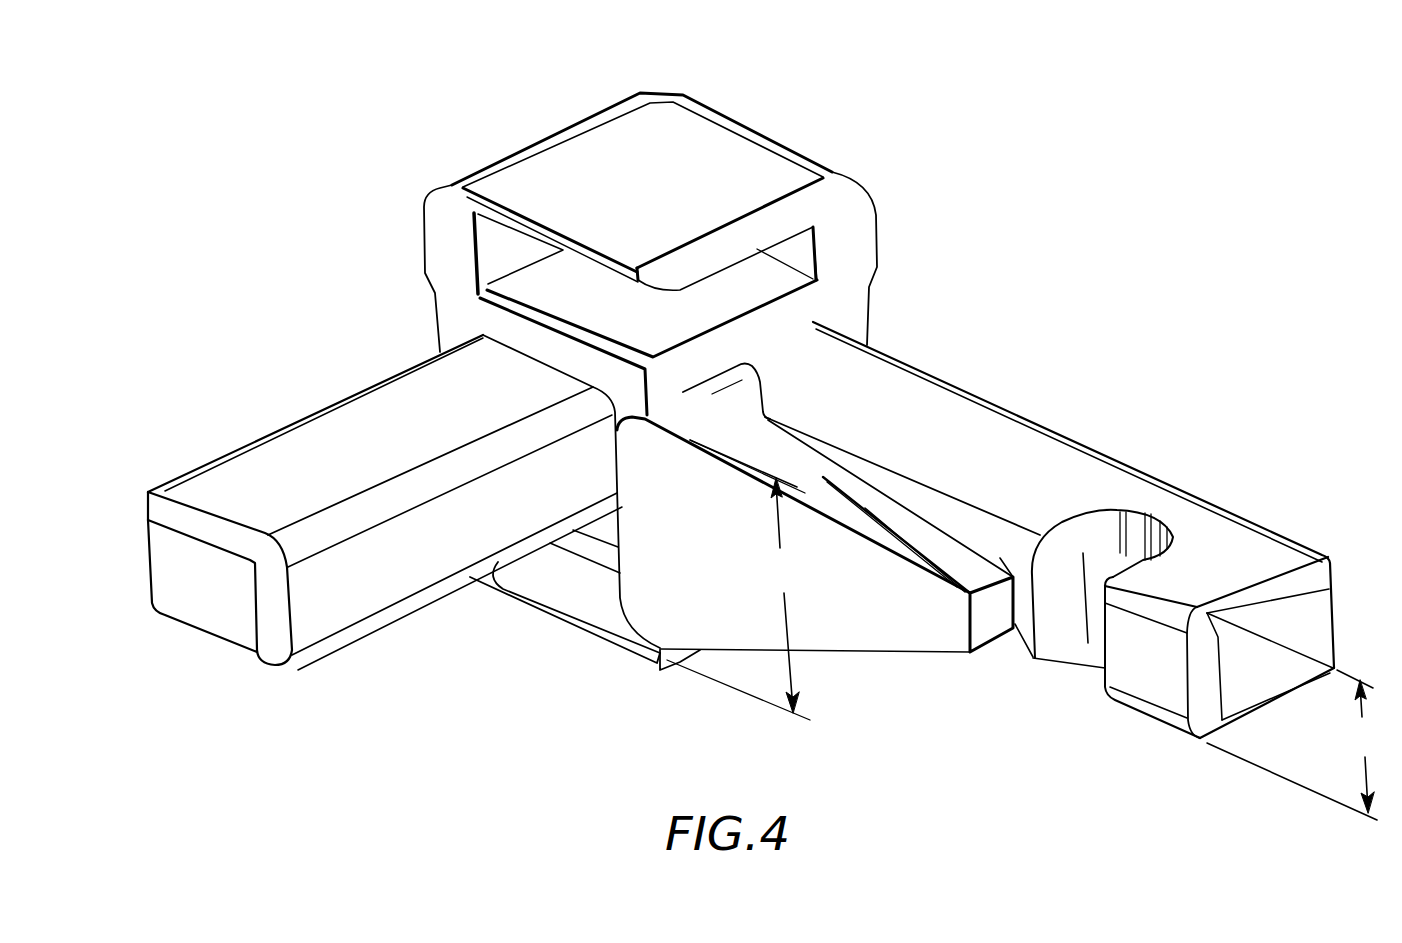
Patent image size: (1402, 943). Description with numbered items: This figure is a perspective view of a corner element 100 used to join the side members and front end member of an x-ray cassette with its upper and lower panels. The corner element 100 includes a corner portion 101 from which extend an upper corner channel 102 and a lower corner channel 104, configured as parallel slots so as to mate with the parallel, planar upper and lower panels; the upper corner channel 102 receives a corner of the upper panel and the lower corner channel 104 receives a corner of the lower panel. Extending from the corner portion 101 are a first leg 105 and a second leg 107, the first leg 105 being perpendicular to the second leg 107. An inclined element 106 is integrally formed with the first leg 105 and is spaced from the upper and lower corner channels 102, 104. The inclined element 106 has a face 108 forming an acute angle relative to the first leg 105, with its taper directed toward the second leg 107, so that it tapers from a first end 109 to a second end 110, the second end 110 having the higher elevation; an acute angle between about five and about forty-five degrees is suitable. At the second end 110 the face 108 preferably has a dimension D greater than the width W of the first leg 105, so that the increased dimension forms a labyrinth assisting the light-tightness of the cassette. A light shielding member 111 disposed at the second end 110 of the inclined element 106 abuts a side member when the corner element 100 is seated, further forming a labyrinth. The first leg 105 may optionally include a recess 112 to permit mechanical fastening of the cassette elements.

The corner element 100 is at (899, 139).
The corner portion 101 is at (563, 175).
The upper corner channel 102 is at (767, 281).
The lower corner channel 104 is at (533, 580).
The first leg 105 is at (1010, 443).
The inclined element 106 is at (990, 623).
The second leg 107 is at (313, 445).
The face 108 is at (862, 614).
The first end 109 is at (990, 623).
The second end 110 is at (620, 595).
The light shielding member 111 is at (745, 395).
The recess 112 is at (1097, 663).